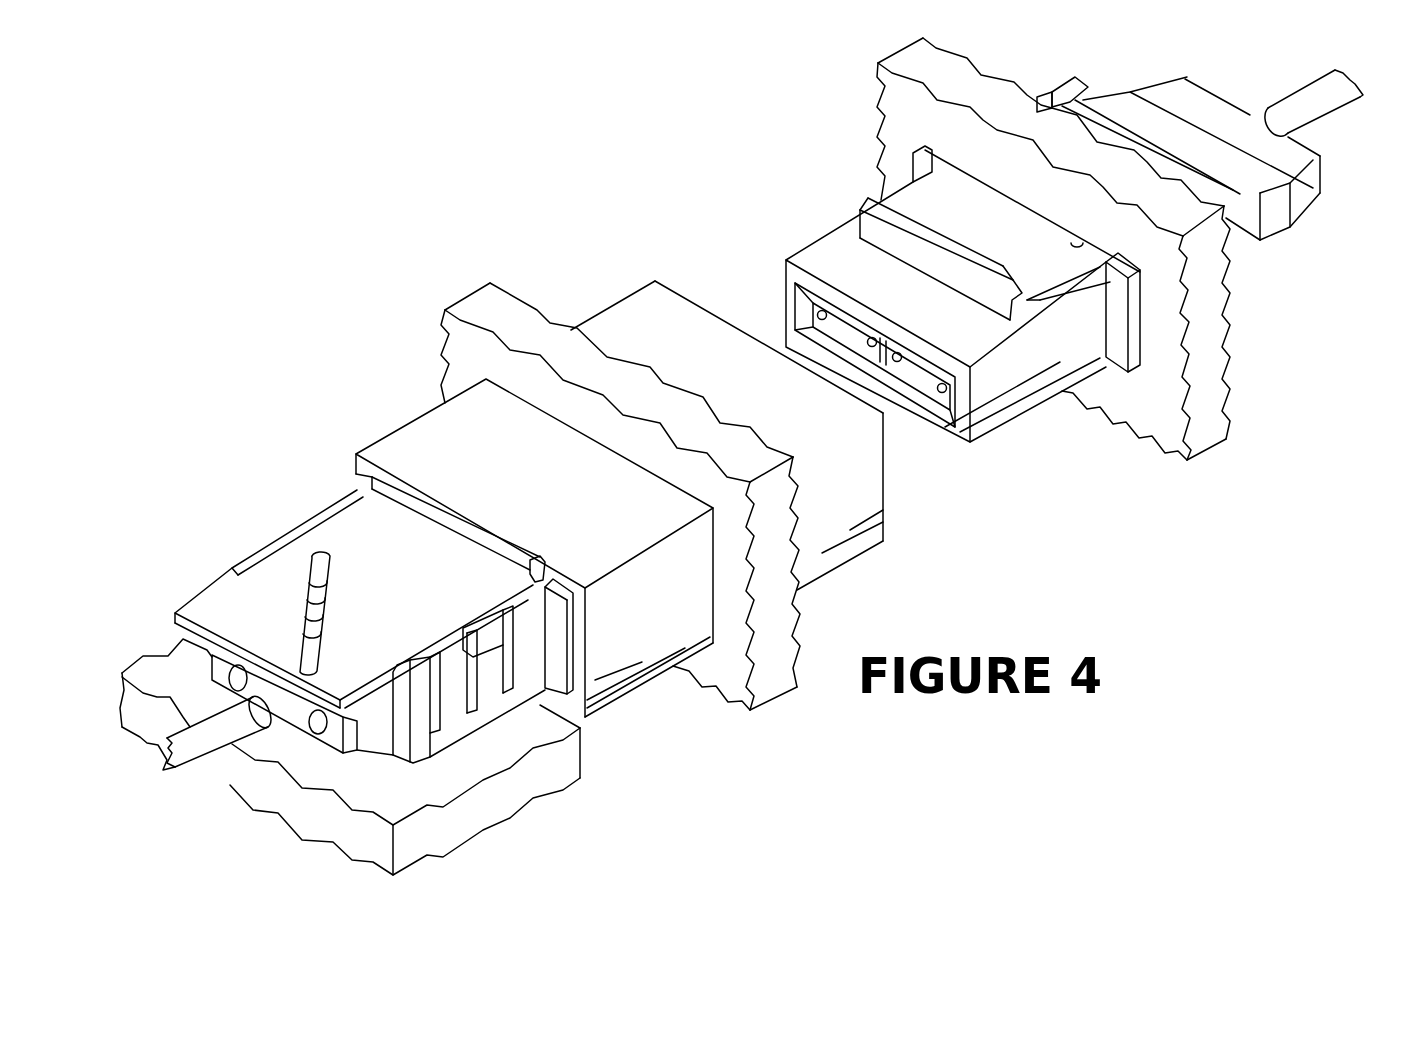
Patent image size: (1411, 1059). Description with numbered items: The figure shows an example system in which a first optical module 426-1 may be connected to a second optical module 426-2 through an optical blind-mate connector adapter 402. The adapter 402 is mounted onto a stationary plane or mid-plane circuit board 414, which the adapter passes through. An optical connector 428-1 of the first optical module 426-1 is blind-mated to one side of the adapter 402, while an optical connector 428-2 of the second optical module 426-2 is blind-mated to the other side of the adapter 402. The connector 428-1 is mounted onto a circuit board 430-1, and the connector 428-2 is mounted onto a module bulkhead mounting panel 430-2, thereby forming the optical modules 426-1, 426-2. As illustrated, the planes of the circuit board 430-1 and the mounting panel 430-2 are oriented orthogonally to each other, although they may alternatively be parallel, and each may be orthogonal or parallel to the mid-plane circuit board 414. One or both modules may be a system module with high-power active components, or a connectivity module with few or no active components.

The optical blind-mate connector adapter 402 is at (424, 397).
The mid-plane circuit board 414 is at (448, 308).
The first optical module 426-1 is at (316, 448).
The second optical module 426-2 is at (853, 152).
The optical connector 428-1 is at (272, 552).
The optical connector 428-2 is at (1068, 395).
The circuit board 430-1 is at (518, 815).
The module bulkhead mounting panel 430-2 is at (1208, 445).